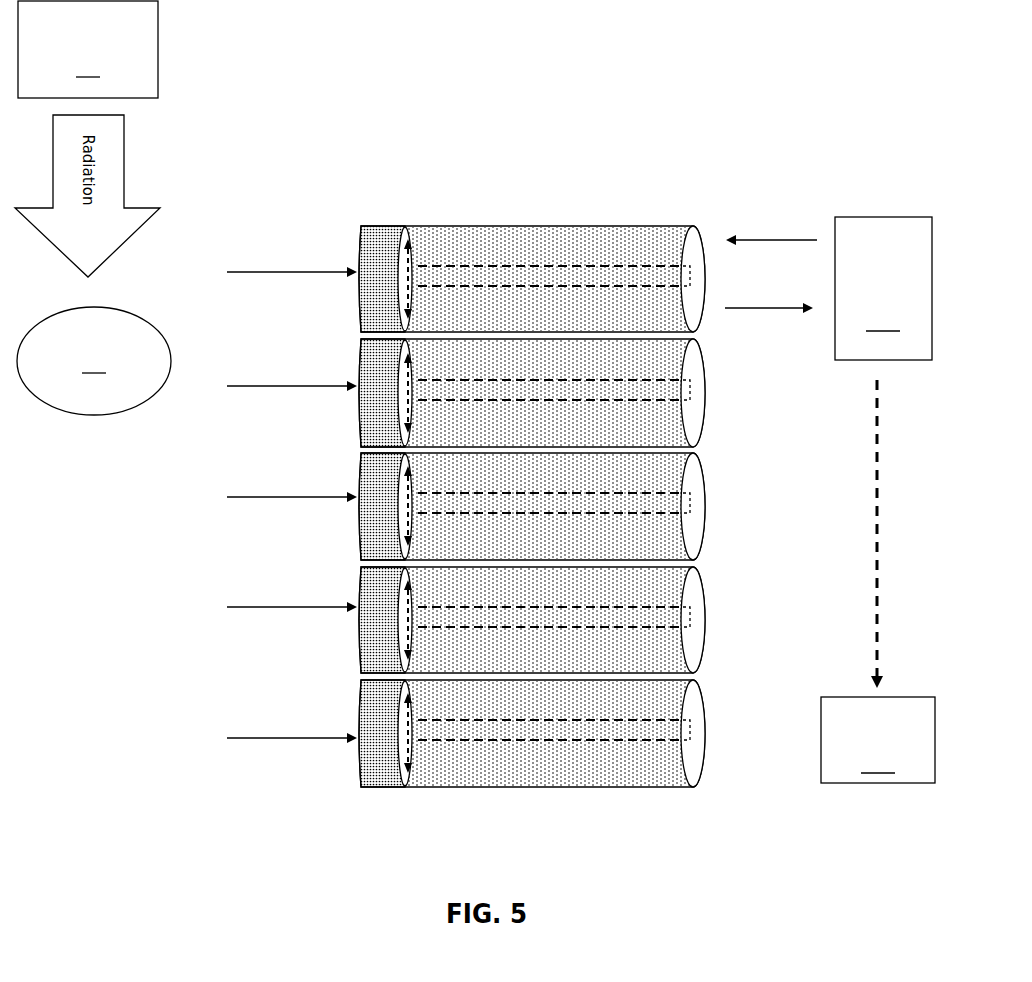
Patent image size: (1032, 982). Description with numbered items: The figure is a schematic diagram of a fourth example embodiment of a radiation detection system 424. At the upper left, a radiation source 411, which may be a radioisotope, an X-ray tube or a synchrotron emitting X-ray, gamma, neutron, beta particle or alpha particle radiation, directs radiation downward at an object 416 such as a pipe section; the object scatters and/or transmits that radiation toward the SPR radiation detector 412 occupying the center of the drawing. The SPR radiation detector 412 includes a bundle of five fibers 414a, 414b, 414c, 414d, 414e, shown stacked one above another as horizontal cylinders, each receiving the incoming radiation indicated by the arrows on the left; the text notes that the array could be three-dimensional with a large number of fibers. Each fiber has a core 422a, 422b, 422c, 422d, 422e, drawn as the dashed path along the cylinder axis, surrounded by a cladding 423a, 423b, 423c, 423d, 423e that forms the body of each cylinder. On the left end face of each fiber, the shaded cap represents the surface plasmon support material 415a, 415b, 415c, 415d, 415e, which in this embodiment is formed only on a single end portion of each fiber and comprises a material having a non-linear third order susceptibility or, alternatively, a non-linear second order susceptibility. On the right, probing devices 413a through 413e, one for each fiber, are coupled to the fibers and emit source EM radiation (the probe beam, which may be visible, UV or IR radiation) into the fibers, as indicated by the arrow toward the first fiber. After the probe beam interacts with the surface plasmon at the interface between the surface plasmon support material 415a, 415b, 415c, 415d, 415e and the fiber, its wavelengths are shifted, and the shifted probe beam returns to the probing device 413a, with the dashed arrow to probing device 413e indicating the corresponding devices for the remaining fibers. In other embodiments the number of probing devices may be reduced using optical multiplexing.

The radiation source 411 is at (88, 49).
The object 416 is at (94, 361).
The SPR radiation detector 412 is at (628, 180).
The radiation detection system 424 is at (815, 84).
The probing device 413a is at (883, 288).
The probing device 413e is at (878, 740).
The fiber 414a is at (470, 222).
The fiber 414b is at (352, 358).
The fiber 414c is at (352, 479).
The fiber 414d is at (352, 584).
The fiber 414e is at (352, 717).
The surface plasmon support material 415a is at (385, 279).
The surface plasmon support material 415b is at (385, 393).
The surface plasmon support material 415c is at (385, 506).
The surface plasmon support material 415d is at (385, 620).
The surface plasmon support material 415e is at (385, 733).
The core 422a is at (635, 275).
The core 422b is at (658, 387).
The core 422c is at (663, 507).
The core 422d is at (648, 613).
The core 422e is at (622, 732).
The cladding 423a is at (561, 257).
The cladding 423b is at (561, 370).
The cladding 423c is at (561, 484).
The cladding 423d is at (561, 598).
The cladding 423e is at (561, 711).